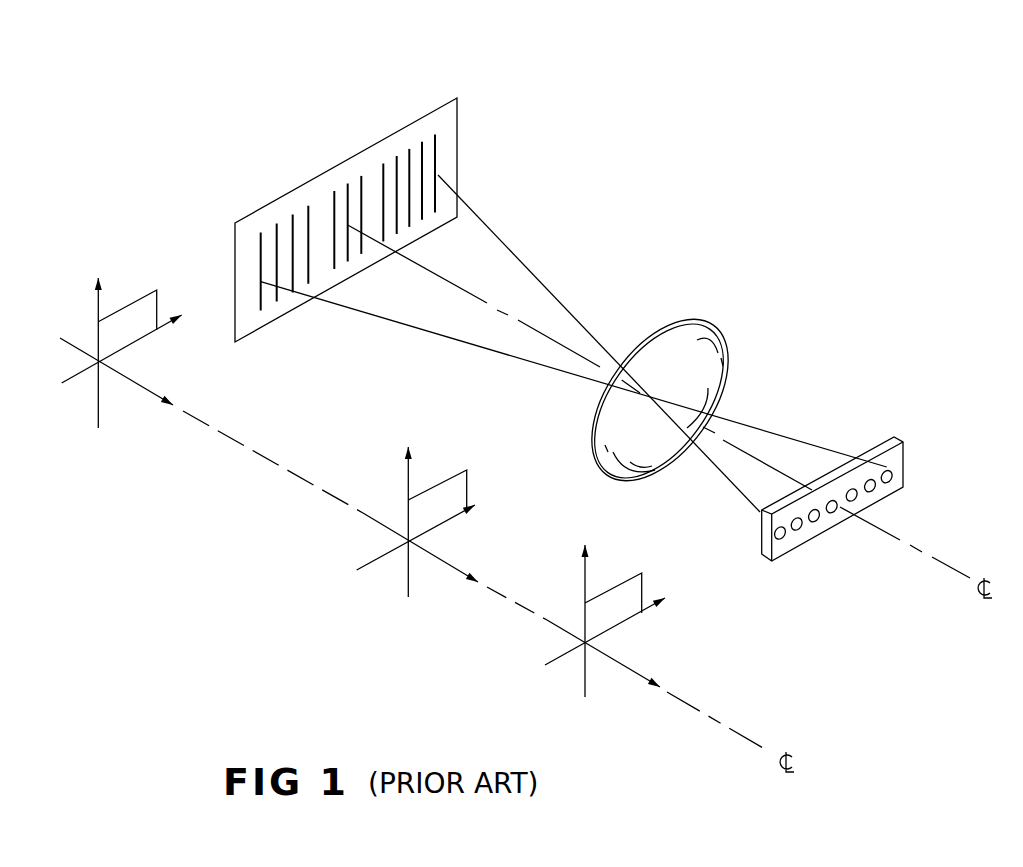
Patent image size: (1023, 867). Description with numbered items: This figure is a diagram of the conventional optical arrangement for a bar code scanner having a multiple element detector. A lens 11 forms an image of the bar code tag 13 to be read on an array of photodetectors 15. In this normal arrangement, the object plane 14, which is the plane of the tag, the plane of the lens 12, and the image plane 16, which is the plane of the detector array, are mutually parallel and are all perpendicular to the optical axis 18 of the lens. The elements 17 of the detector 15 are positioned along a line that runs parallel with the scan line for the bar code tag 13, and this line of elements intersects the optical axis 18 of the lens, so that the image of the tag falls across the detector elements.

The lens 11 is at (707, 323).
The plane of the lens 12 is at (443, 478).
The bar code tag 13 is at (460, 138).
The object plane 14 is at (135, 298).
The array of photodetectors 15 is at (903, 457).
The image plane 16 is at (617, 582).
The elements of the detector 17 is at (797, 531).
The optical axis 18 is at (947, 563).